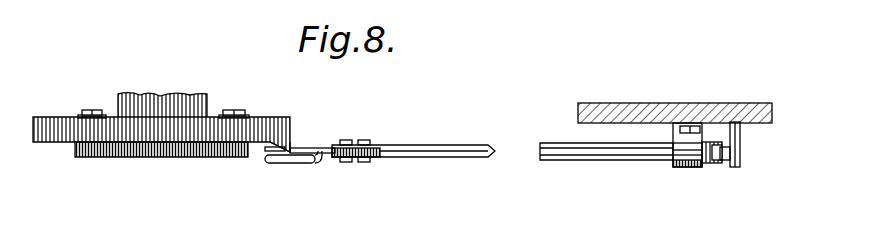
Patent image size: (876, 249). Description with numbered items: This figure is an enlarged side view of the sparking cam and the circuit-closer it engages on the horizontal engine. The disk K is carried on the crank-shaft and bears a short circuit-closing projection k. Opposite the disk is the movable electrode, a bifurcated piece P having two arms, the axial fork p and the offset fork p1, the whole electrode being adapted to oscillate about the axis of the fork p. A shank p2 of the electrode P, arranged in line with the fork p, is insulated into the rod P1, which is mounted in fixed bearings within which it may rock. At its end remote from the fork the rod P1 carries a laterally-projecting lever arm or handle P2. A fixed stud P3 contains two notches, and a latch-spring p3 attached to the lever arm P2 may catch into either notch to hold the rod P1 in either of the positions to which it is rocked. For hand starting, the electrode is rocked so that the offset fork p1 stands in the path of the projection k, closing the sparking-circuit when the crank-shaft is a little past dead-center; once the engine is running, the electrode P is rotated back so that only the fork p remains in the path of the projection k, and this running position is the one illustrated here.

The disk K is at (62, 122).
The circuit-closing projection k is at (291, 147).
The axial fork p is at (267, 152).
The offset fork p1 is at (272, 162).
The bifurcated electrode P is at (310, 164).
The shank p2 is at (326, 154).
The rod P1 is at (449, 160).
The lever arm P2 is at (716, 160).
The fixed stud P3 is at (741, 148).
The latch-spring p3 is at (737, 164).